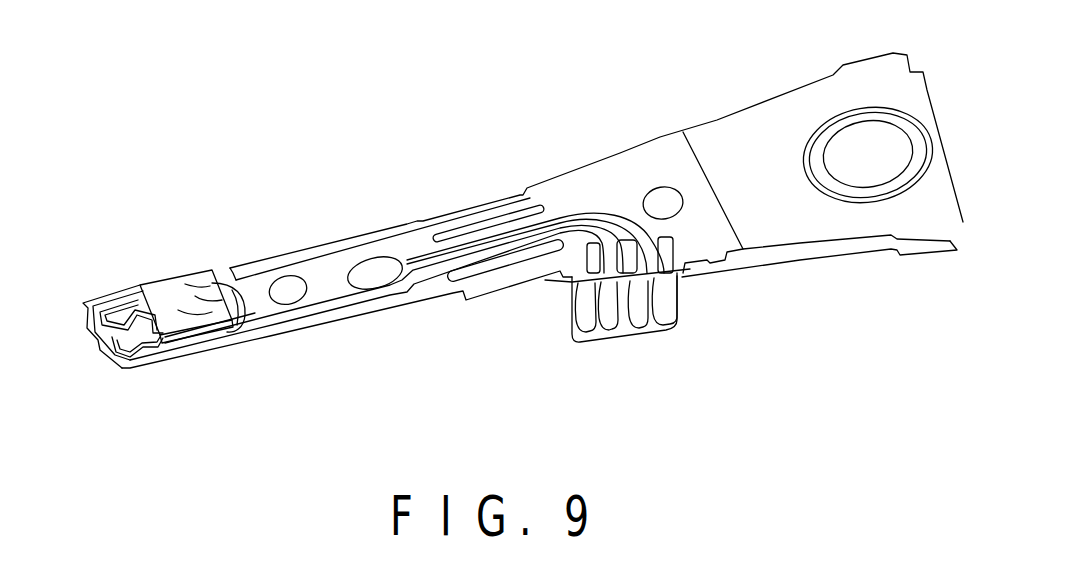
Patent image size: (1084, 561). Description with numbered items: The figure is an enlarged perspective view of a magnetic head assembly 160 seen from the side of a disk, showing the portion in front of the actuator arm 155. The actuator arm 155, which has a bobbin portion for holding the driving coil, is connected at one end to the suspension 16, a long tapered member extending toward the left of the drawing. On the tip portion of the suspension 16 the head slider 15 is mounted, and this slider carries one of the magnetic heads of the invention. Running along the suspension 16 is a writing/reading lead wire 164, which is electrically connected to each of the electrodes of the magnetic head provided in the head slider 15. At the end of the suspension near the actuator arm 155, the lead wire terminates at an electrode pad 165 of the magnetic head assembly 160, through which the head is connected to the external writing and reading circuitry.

The magnetic head assembly 160 is at (434, 120).
The suspension 16 is at (400, 231).
The head slider 15 is at (168, 282).
The actuator arm 155 is at (815, 223).
The writing/reading lead wire 164 is at (343, 305).
The electrode pad 165 is at (648, 317).